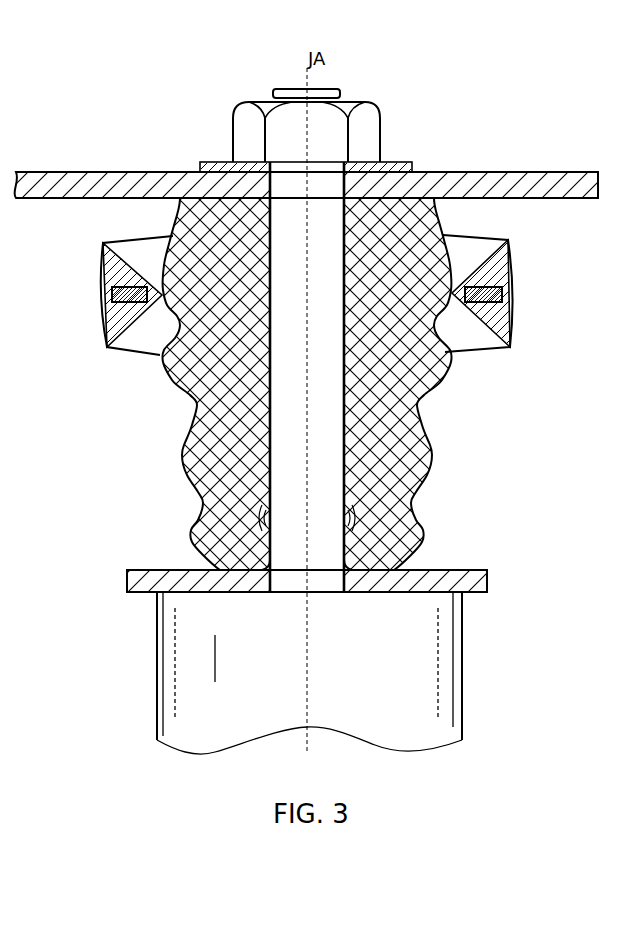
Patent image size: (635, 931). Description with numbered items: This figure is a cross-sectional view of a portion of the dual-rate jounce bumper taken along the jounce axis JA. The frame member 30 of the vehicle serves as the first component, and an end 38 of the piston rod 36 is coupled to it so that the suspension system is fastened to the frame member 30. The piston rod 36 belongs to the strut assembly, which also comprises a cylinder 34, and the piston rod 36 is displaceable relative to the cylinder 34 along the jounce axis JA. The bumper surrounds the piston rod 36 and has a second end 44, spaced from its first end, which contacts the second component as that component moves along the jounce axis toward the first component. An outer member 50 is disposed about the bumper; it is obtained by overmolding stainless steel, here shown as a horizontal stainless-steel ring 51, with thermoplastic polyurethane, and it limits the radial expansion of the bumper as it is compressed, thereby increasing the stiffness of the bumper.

The frame member 30 is at (543, 187).
The cylinder 34 is at (415, 664).
The piston rod 36 is at (316, 466).
The end of the piston rod 38 is at (397, 142).
The second end of the bumper 44 is at (190, 530).
The outer member 50 is at (517, 270).
The insert 51 is at (515, 323).